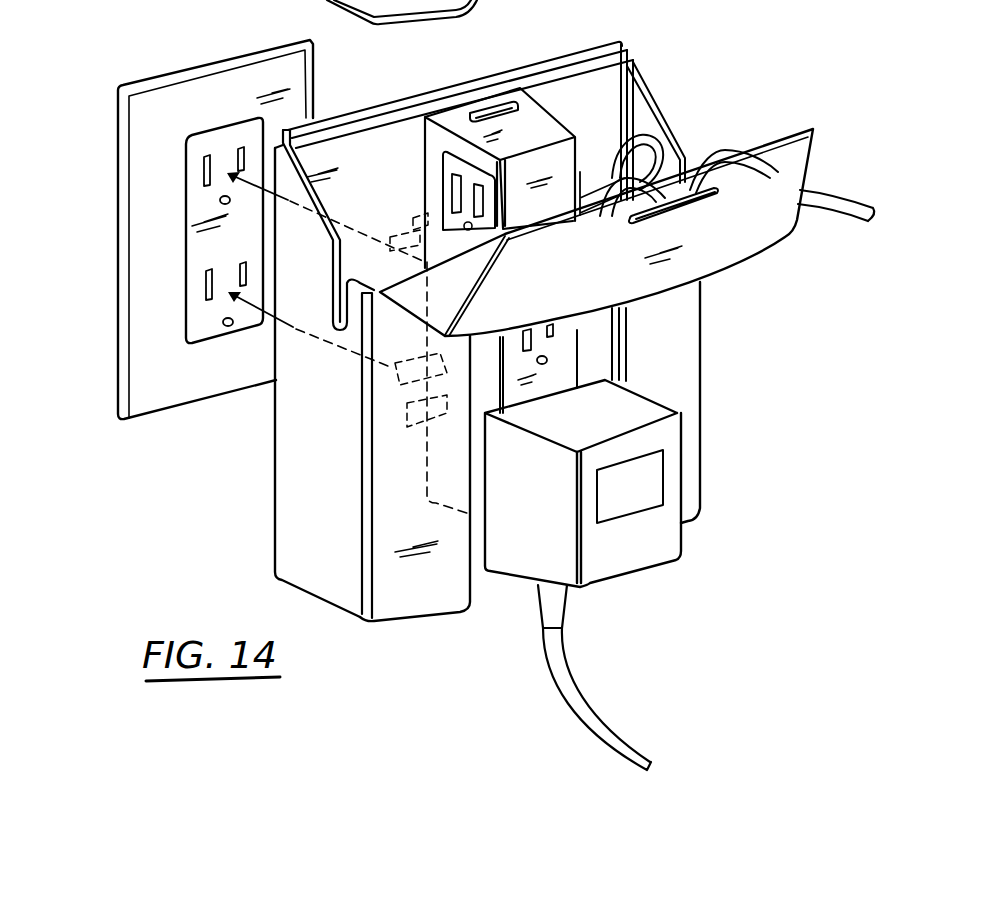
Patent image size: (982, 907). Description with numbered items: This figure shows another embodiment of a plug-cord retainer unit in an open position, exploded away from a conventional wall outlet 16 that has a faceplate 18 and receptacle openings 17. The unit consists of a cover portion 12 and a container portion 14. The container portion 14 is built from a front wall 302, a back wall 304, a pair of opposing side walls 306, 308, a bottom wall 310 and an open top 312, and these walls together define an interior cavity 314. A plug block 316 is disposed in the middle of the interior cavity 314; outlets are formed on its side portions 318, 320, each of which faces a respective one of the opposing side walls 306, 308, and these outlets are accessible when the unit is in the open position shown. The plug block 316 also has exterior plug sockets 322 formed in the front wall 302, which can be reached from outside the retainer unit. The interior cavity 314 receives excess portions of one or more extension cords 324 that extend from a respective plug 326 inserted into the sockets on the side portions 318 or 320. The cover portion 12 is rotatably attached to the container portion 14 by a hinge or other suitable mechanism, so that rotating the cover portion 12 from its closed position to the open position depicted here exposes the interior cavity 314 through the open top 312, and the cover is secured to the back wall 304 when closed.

The cover portion 12 is at (767, 212).
The container portion 14 is at (680, 405).
The wall outlet 16 is at (170, 112).
The outlet sockets 17 is at (203, 167).
The faceplate 18 is at (218, 95).
The front wall 302 is at (427, 590).
The back wall 304 is at (628, 38).
The side wall 306 is at (308, 480).
The side wall 308 is at (640, 113).
The bottom wall 310 is at (455, 20).
The open top 312 is at (365, 162).
The interior cavity 314 is at (563, 104).
The plug block 316 is at (518, 107).
The side portion 318 is at (440, 148).
The side portion 320 is at (555, 118).
The exterior plug sockets 322 is at (560, 328).
The extension cords 324 is at (680, 132).
The plug 326 is at (643, 112).